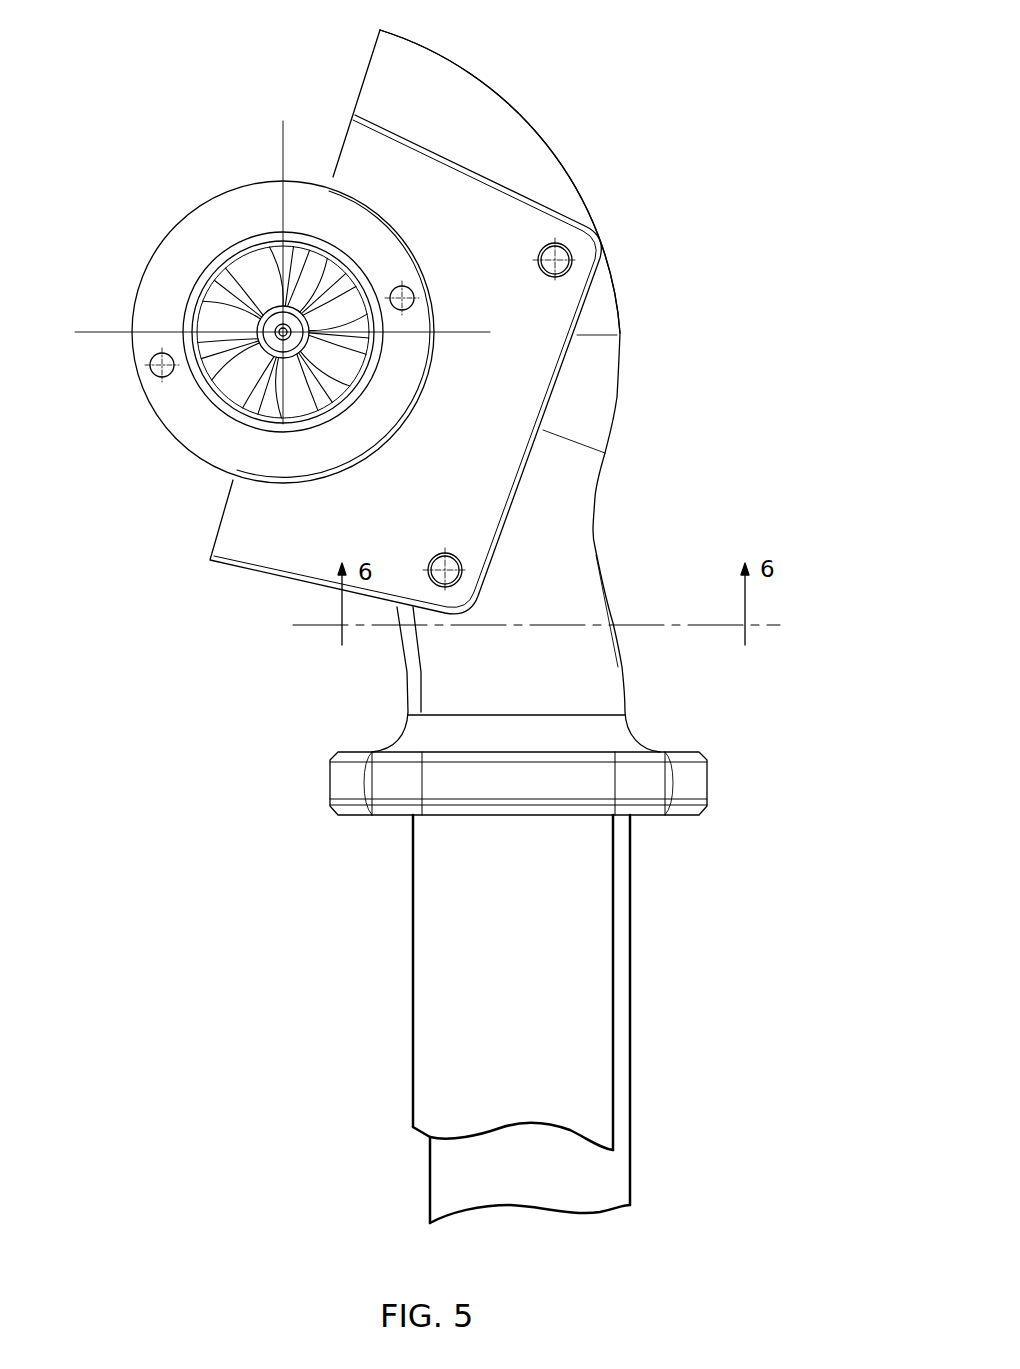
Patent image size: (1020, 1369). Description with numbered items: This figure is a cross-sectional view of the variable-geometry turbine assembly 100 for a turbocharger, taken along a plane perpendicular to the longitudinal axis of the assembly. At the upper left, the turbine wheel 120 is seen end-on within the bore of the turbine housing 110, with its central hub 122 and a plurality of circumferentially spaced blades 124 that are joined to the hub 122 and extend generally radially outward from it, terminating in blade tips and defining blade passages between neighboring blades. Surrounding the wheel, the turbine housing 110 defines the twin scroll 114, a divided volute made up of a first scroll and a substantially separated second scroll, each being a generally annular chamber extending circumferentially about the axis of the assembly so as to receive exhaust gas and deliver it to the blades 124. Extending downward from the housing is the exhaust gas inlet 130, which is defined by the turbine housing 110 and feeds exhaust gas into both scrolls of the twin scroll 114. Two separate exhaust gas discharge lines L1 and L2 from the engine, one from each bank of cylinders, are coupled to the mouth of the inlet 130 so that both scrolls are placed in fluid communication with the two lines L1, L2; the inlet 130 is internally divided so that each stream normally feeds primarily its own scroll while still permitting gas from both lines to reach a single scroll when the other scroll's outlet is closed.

The variable-geometry turbine assembly 100 is at (632, 122).
The turbine housing 110 is at (607, 285).
The twin scroll 114 is at (470, 65).
The turbine wheel 120 is at (203, 292).
The hub 122 is at (353, 290).
The blades 124 is at (270, 393).
The exhaust gas inlet 130 is at (623, 685).
The exhaust gas discharge line L1 is at (412, 1063).
The exhaust gas discharge line L2 is at (632, 1167).